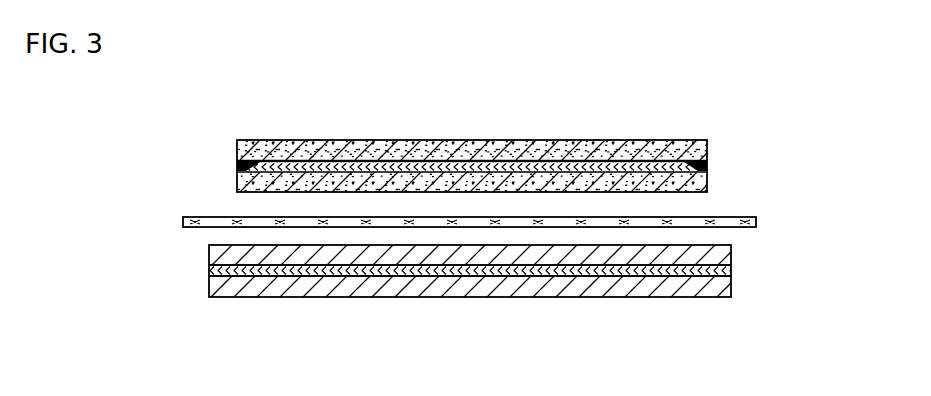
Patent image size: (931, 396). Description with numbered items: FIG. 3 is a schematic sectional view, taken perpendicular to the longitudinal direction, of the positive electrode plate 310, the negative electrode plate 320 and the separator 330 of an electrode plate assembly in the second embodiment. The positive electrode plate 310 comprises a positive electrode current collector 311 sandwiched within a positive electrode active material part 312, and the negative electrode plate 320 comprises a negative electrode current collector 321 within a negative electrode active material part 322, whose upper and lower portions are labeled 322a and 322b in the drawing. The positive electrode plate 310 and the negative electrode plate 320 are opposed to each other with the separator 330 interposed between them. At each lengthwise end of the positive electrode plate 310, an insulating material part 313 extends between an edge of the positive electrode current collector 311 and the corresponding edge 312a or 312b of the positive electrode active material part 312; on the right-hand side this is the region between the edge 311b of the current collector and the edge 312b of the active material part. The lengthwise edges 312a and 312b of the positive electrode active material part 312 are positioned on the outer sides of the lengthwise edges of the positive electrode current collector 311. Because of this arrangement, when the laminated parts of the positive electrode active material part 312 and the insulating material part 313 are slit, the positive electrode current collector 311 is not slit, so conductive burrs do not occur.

The positive electrode plate 310 is at (450, 140).
The positive electrode current collector 311 is at (446, 136).
The edge of the positive electrode current collector 311b is at (691, 164).
The positive electrode active material part 312 is at (474, 150).
The edge of the positive electrode active material part 312a is at (238, 159).
The edge of the positive electrode active material part 312b is at (708, 184).
The insulating material part 313 is at (237, 164).
The negative electrode plate 320 is at (472, 311).
The negative electrode current collector 321 is at (455, 273).
The negative electrode active material part 322 is at (472, 302).
The upper outer layer of second laminate 322a is at (210, 251).
The lower outer layer of second laminate 322b is at (731, 258).
The separator 330 is at (756, 227).